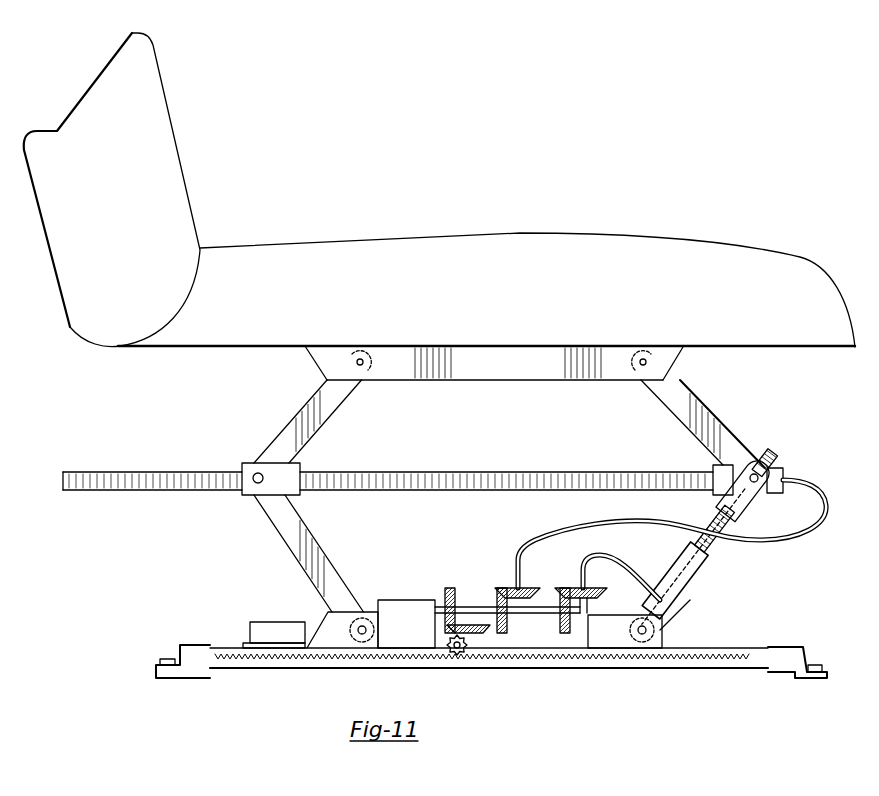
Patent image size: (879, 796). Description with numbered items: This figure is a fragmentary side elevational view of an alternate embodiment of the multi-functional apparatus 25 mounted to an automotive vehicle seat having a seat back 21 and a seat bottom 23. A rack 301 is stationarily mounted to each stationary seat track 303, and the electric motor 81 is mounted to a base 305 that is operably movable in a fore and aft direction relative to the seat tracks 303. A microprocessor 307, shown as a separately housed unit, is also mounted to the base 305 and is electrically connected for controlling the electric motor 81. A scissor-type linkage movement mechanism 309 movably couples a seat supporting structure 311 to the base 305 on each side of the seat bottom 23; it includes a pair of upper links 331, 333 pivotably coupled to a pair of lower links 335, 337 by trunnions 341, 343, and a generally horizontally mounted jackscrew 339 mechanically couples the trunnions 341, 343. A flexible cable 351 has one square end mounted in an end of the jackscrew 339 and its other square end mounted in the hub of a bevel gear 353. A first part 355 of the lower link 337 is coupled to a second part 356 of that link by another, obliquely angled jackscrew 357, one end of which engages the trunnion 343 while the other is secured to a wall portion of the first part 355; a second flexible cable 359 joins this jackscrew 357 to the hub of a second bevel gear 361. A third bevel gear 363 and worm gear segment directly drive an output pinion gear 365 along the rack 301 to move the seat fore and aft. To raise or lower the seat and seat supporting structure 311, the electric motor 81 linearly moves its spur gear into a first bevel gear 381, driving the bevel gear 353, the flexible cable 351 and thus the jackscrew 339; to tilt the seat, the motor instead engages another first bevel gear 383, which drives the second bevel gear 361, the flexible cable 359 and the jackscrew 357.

The seat back 21 is at (165, 165).
The seat bottom 23 is at (543, 258).
The multi-functional apparatus 25 is at (358, 117).
The electric motor 81 is at (415, 600).
The rack 301 is at (237, 668).
The stationary seat track 303 is at (177, 657).
The base 305 is at (325, 640).
The microprocessor 307 is at (263, 630).
The scissor-type linkage movement mechanism 309 is at (262, 460).
The seat supporting structure 311 is at (465, 368).
The upper link 331 is at (312, 403).
The upper link 333 is at (697, 403).
The lower link 335 is at (250, 545).
The lower link 337 is at (765, 508).
The jackscrew 339 is at (112, 472).
The trunnion 341 is at (328, 460).
The trunnion 343 is at (717, 482).
The flexible cable 351 is at (793, 535).
The bevel gear 353 is at (495, 590).
The first part of lower link 355 is at (662, 603).
The second part of lower link 356 is at (668, 610).
The jackscrew 357 is at (775, 453).
The second flexible cable 359 is at (630, 575).
The second bevel gear 361 is at (570, 592).
The third bevel gear 363 is at (480, 634).
The output pinion gear 365 is at (447, 655).
The first bevel gear 381 is at (485, 592).
The first bevel gear 383 is at (553, 625).